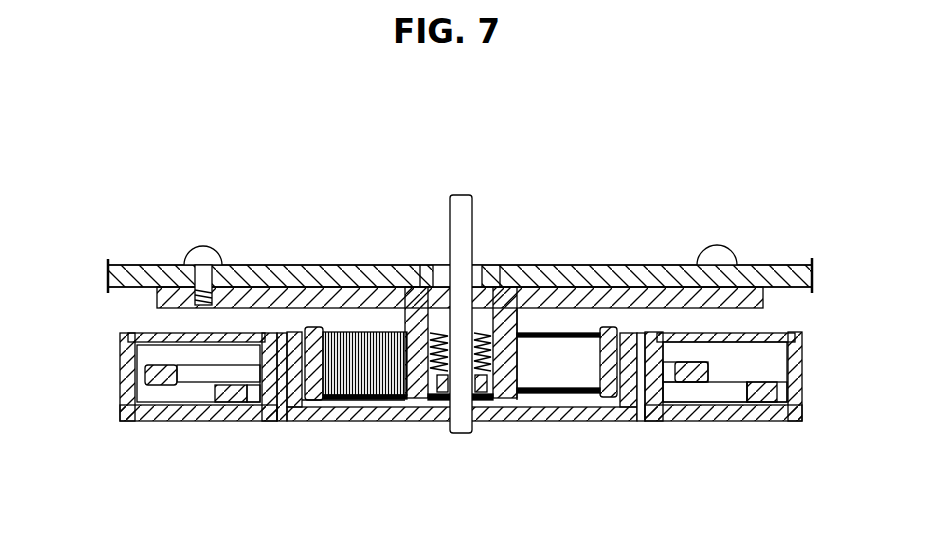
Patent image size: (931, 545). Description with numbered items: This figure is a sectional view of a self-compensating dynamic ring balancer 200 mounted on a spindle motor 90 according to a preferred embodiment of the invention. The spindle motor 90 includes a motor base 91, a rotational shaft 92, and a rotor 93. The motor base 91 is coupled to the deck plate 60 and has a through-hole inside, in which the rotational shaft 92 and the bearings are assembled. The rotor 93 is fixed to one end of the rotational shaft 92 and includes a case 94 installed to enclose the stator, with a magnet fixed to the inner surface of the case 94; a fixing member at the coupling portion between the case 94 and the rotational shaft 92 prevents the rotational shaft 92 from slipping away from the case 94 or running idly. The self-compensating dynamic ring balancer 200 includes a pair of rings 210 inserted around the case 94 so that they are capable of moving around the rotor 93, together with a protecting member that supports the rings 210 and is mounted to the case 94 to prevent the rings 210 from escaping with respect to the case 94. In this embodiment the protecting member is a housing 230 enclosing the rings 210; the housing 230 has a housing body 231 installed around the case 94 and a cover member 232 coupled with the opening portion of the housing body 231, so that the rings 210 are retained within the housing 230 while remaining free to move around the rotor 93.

The deck plate 60 is at (793, 263).
The motor base 91 is at (762, 295).
The rotational shaft 92 is at (472, 201).
The spindle motor 90 is at (548, 438).
The rotor 93 is at (630, 436).
The case 94 is at (650, 421).
The self-compensating dynamic ring balancer 200 is at (104, 382).
The rings 210 is at (175, 386).
The housing 230 is at (815, 379).
The housing body 231 is at (808, 414).
The cover member 232 is at (687, 334).